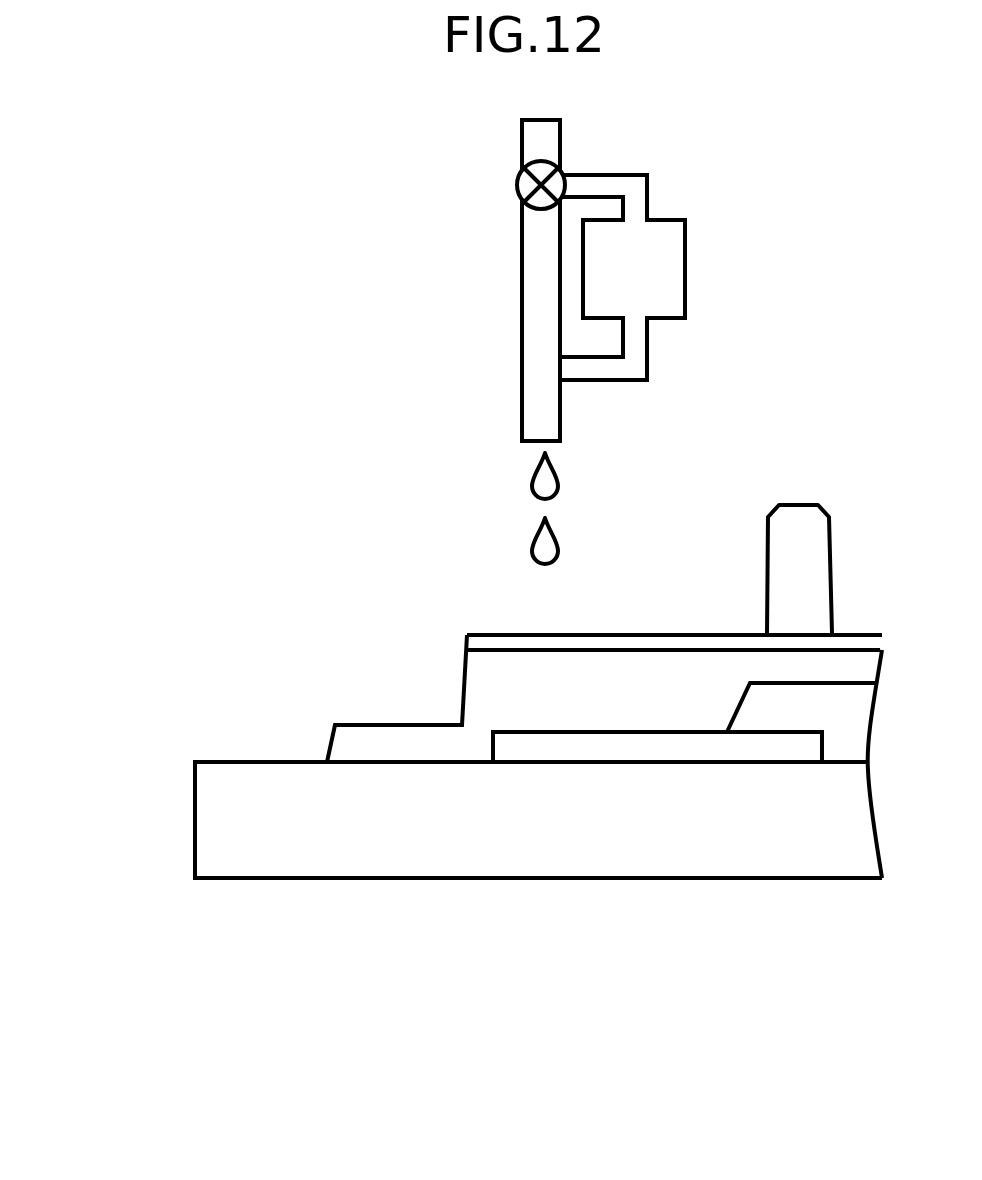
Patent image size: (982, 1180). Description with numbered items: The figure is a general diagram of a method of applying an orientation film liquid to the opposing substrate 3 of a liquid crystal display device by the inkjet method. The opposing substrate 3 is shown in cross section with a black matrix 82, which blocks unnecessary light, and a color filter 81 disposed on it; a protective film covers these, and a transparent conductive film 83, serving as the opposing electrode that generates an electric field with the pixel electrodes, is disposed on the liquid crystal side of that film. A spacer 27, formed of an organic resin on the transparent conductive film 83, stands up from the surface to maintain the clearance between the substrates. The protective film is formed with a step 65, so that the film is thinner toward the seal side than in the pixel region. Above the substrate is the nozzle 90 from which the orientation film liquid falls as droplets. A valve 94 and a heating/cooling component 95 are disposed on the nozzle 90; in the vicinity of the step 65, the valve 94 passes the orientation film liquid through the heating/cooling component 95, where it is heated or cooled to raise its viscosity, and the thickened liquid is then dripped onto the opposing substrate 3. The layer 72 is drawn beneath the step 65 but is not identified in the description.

The opposing substrate 3 is at (222, 805).
The spacer 27 is at (800, 530).
The step 65 is at (462, 685).
The insulating layer 72 is at (273, 722).
The color filter 81 is at (828, 717).
The black matrix 82 is at (650, 743).
The transparent conductive film 83 is at (555, 643).
The nozzle 90 is at (543, 315).
The valve 94 is at (527, 185).
The heating/cooling component 95 is at (640, 263).